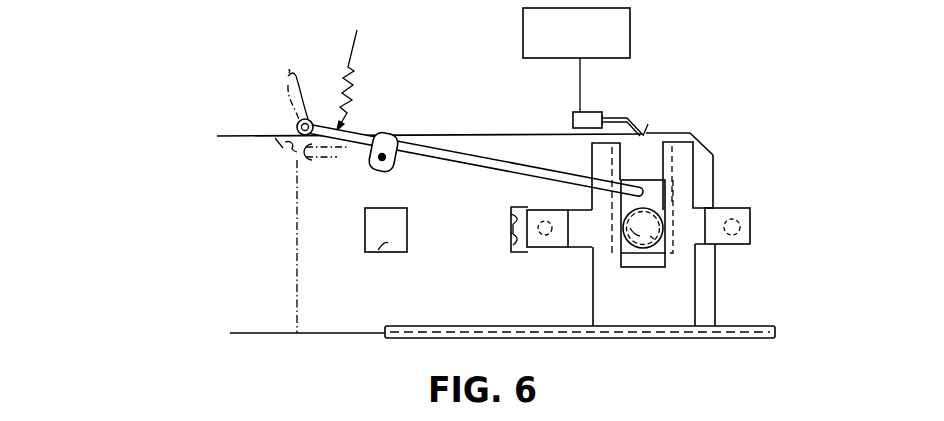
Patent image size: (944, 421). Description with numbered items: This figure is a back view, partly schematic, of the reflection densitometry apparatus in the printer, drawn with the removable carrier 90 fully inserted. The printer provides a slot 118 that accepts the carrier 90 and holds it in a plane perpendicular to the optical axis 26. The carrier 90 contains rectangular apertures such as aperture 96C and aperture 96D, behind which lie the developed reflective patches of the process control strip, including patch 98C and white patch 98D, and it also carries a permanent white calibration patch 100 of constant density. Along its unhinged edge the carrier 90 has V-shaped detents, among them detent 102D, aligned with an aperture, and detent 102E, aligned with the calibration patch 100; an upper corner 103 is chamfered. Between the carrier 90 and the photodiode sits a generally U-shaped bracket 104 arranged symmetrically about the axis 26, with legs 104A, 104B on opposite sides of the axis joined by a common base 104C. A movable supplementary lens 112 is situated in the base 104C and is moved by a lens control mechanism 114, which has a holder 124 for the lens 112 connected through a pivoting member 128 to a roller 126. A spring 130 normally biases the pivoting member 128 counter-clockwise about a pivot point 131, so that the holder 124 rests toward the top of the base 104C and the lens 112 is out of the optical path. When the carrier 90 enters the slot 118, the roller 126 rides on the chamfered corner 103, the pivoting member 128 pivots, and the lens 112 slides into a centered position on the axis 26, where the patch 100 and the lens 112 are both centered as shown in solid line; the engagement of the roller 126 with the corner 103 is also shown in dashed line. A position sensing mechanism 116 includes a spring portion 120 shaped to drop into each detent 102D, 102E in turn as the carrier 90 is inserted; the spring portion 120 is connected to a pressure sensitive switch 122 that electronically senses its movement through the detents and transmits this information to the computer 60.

The axis 26 is at (645, 225).
The computer 60 is at (525, 26).
The removable carrier 90 is at (270, 186).
The rectangular aperture 96C is at (378, 250).
The rectangular aperture 96D is at (510, 248).
The reflective patch 98C is at (373, 230).
The white patch 98D is at (510, 227).
The white calibration patch 100 is at (642, 247).
The V-shaped detent 102D is at (517, 143).
The V-shaped detent 102E is at (668, 130).
The chamfered upper corner 103 is at (283, 150).
The U-shaped bracket 104 is at (700, 189).
The bracket leg 104A is at (750, 240).
The bracket leg 104B is at (540, 248).
The bracket base 104C is at (680, 281).
The supplementary lens 112 is at (623, 248).
The lens control mechanism 114 is at (415, 90).
The position sensing mechanism 116 is at (612, 106).
The slot 118 is at (762, 338).
The spring portion 120 is at (623, 121).
The pressure sensitive switch 122 is at (572, 117).
The holder 124 is at (648, 185).
The roller 126 is at (280, 92).
The pivoting member 128 is at (441, 161).
The spring 130 is at (343, 91).
The pivot point 131 is at (388, 172).